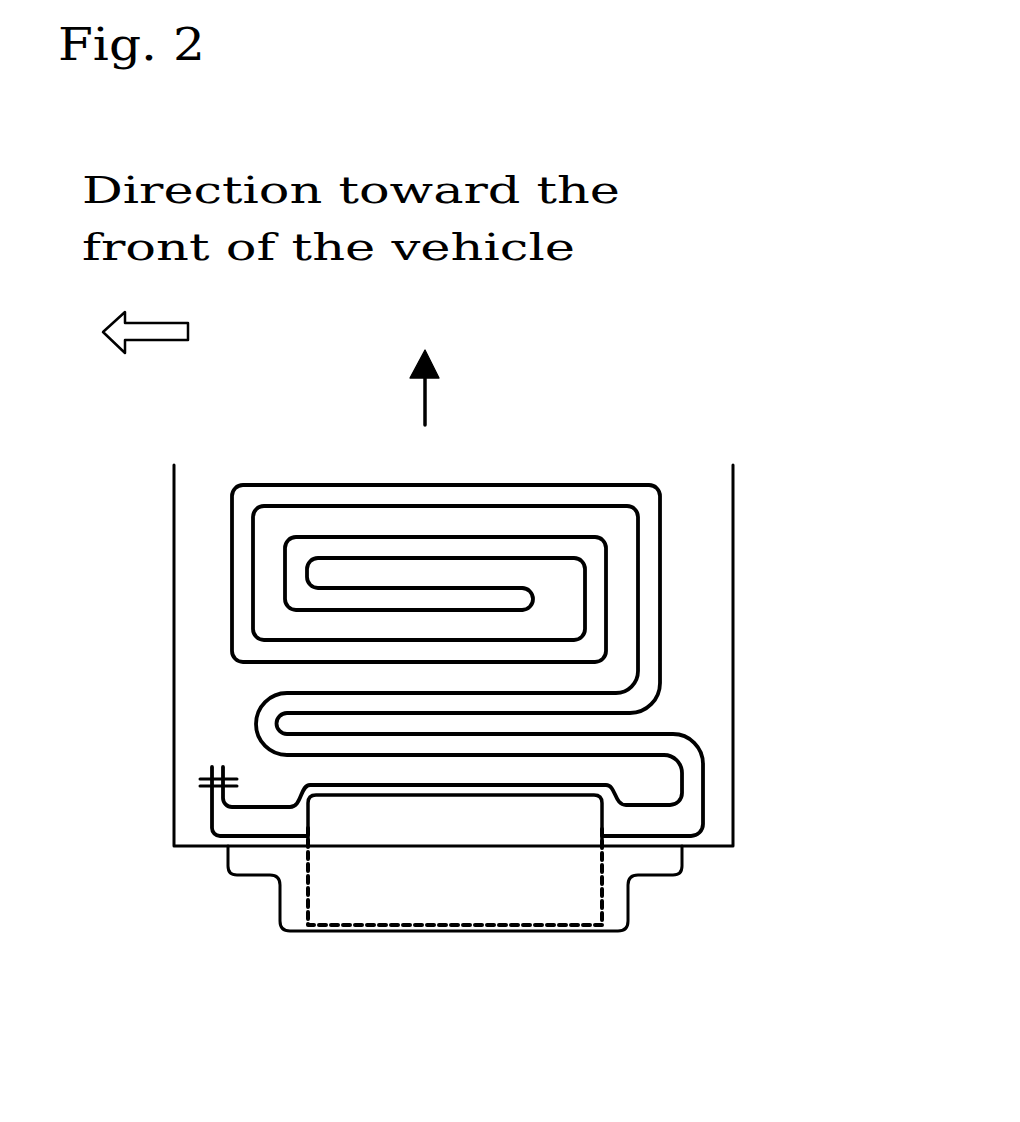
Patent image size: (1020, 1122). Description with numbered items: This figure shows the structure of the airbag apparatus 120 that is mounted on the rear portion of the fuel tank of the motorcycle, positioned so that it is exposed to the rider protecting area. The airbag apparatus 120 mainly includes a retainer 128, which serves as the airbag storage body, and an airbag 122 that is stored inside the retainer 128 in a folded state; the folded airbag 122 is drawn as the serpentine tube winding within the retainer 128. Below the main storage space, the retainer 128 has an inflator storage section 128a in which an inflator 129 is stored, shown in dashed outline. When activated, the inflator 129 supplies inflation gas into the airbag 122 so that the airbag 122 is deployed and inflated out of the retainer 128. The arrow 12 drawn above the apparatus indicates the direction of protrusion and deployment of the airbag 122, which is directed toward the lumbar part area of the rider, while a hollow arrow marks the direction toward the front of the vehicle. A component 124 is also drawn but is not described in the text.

The arrow 12 is at (458, 387).
The airbag apparatus 120 is at (767, 365).
The airbag 122 is at (674, 582).
The heat exchange block 124 is at (703, 795).
The retainer 128 is at (737, 692).
The inflator storage section 128a is at (632, 905).
The inflator 129 is at (305, 877).